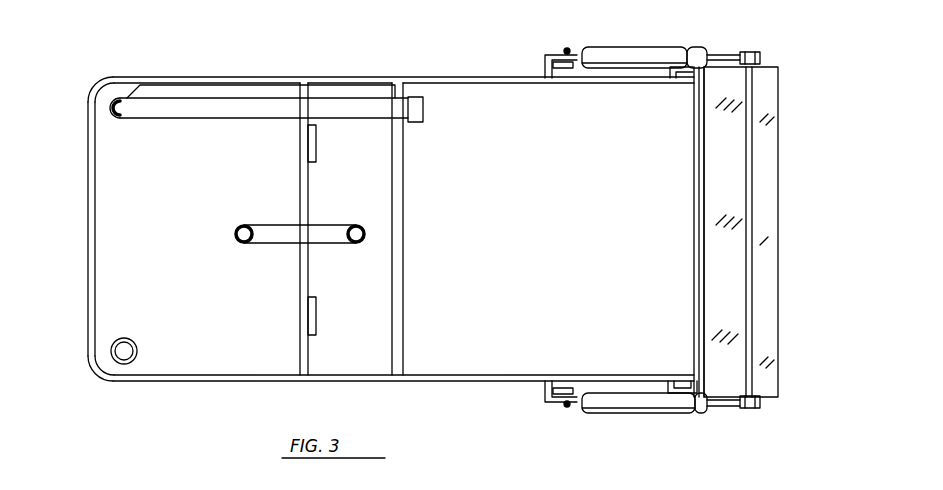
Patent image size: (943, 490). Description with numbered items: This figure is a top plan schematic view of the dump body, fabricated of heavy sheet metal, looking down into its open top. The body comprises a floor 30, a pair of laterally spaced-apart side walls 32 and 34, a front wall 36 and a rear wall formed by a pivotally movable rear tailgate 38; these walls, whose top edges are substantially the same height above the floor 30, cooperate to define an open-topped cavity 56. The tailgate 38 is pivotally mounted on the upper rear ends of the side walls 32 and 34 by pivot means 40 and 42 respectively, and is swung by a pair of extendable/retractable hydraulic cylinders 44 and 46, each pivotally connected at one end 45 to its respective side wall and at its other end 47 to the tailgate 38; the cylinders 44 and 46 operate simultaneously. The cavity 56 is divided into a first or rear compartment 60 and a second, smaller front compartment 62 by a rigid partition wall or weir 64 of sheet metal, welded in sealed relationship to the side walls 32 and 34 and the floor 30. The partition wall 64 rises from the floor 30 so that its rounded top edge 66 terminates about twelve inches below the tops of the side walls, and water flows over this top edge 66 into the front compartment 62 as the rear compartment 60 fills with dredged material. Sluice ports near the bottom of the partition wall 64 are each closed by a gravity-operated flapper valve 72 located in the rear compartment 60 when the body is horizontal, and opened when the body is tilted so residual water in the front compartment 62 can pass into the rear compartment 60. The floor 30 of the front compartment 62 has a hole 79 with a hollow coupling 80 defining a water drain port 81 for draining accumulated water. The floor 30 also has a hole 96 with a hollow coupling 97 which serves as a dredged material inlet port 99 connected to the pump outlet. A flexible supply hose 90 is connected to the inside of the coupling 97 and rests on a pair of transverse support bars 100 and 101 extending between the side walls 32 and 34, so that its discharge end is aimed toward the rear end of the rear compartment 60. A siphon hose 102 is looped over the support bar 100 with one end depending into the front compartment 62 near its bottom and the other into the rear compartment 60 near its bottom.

The floor 30 is at (433, 232).
The side wall 32 is at (462, 385).
The side wall 34 is at (472, 78).
The front wall 36 is at (137, 269).
The rear tailgate 38 is at (770, 125).
The pivot means 40 is at (686, 380).
The pivot means 42 is at (695, 47).
The hydraulic cylinder 44 is at (652, 415).
The cylinder end 45 is at (572, 50).
The hydraulic cylinder 46 is at (650, 22).
The cylinder end 47 is at (752, 57).
The cavity 56 is at (246, 354).
The rear compartment 60 is at (496, 278).
The front compartment 62 is at (108, 169).
The partition wall 64 is at (300, 270).
The top edge 66 is at (310, 277).
The flapper valve 72 is at (318, 152).
The hole 79 is at (115, 336).
The hollow coupling 80 is at (150, 321).
The water drain port 81 is at (111, 351).
The supply hose 90 is at (232, 92).
The hole 96 is at (108, 114).
The hollow coupling 97 is at (147, 78).
The dredged material inlet port 99 is at (114, 76).
The support bar 100 is at (318, 85).
The support bar 101 is at (406, 155).
The siphon hose 102 is at (340, 214).